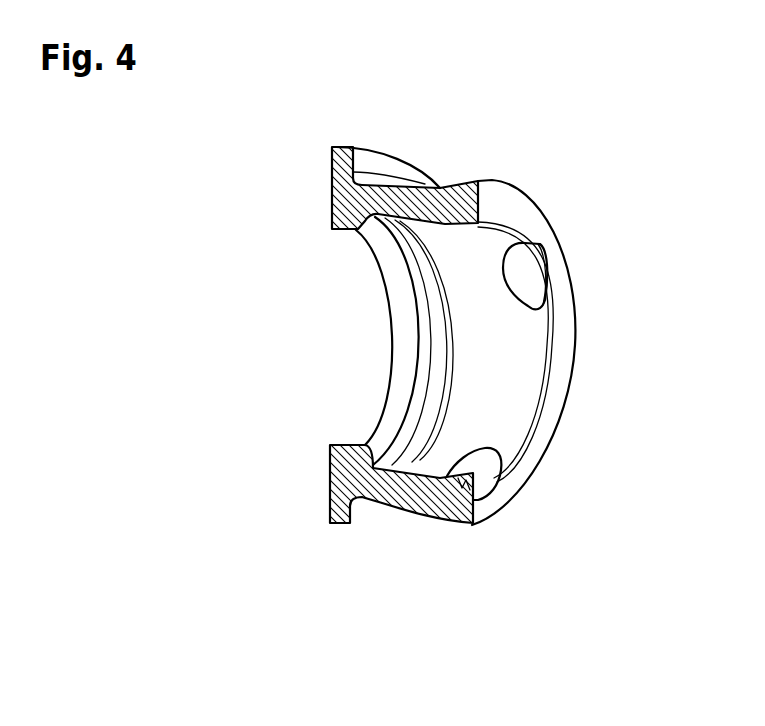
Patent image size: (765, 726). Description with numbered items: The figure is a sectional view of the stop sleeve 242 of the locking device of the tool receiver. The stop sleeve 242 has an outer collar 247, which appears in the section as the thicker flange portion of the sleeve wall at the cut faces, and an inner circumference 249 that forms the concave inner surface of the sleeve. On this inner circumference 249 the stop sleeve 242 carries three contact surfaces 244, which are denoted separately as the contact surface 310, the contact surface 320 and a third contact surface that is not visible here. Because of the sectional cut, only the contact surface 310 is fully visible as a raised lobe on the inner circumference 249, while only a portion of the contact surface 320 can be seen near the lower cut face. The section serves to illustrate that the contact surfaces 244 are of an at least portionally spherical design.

The stop sleeve 242 is at (225, 170).
The contact surfaces 244 is at (522, 301).
The outer collar 247 is at (338, 510).
The inner circumference 249 is at (492, 380).
The contact surface 310 is at (522, 267).
The contact surface 320 is at (470, 525).